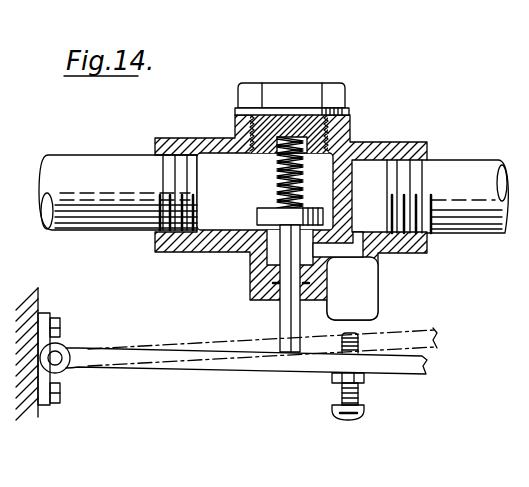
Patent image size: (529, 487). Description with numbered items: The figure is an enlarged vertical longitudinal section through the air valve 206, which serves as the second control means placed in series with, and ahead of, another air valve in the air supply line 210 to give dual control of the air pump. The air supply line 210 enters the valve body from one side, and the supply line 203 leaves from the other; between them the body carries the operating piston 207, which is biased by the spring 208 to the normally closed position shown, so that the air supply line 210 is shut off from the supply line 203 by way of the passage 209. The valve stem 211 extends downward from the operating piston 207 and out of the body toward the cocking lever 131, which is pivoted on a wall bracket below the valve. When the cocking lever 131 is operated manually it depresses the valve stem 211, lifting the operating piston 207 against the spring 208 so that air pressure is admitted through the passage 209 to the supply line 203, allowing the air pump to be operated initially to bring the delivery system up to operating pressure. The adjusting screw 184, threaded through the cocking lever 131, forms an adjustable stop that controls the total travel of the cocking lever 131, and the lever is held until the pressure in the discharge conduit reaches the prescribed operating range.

The cocking lever 131 is at (405, 378).
The adjusting screw 184 is at (433, 330).
The supply line 203 is at (457, 167).
The air valve 206 is at (350, 122).
The operating piston 207 is at (270, 212).
The spring 208 is at (282, 165).
The passage 209 is at (355, 255).
The air supply line 210 is at (102, 160).
The valve stem 211 is at (287, 323).